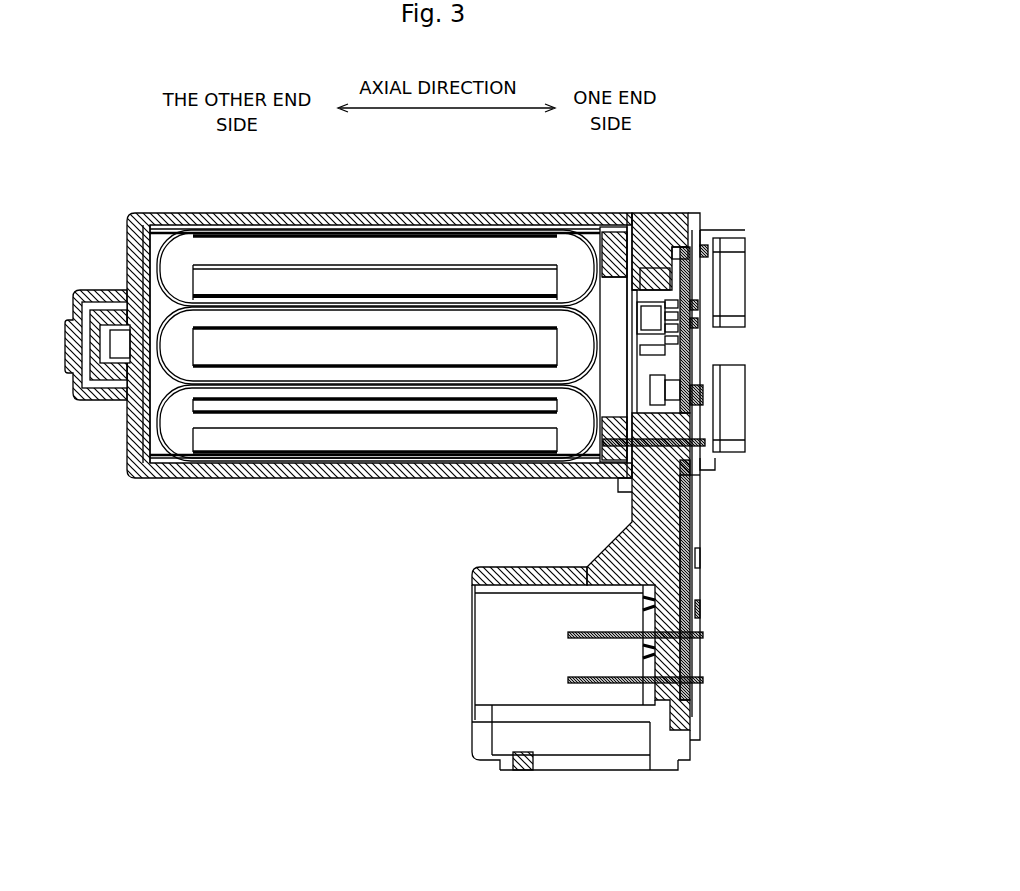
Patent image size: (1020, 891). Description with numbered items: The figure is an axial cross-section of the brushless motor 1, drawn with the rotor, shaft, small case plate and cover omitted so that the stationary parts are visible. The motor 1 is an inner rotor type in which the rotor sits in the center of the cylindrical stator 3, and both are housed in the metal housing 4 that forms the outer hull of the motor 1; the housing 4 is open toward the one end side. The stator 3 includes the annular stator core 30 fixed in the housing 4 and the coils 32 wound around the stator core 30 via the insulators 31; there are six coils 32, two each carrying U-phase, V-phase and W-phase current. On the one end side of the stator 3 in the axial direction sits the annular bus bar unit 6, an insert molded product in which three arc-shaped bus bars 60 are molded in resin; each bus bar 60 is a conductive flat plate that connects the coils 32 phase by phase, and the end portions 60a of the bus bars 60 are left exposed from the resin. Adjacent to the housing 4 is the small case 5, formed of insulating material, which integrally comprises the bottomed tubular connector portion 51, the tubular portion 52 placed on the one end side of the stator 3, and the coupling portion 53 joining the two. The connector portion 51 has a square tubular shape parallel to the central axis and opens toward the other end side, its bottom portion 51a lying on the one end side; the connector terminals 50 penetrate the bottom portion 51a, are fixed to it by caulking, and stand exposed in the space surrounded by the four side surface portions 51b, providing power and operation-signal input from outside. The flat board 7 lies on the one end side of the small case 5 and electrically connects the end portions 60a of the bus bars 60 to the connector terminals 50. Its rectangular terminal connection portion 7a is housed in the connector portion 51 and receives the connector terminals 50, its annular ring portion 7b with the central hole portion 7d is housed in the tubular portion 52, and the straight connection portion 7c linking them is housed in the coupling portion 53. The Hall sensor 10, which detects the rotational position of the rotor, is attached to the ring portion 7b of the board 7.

The brushless motor 1 is at (758, 168).
The stator 3 is at (148, 428).
The housing 4 is at (350, 220).
The small case 5 is at (681, 734).
The bus bar unit 6 is at (618, 226).
The board 7 is at (685, 495).
The terminal connection portion 7a is at (699, 606).
The ring portion 7b is at (706, 266).
The connection portion 7c is at (694, 515).
The hole portion 7d is at (688, 355).
The Hall sensor 10 is at (665, 323).
The stator core 30 is at (377, 348).
The insulator 31 is at (180, 410).
The coil 32 is at (178, 246).
The connector terminal 50 is at (568, 680).
The connector portion 51 is at (585, 647).
The bottom portion 51a is at (690, 659).
The side surface portion 51b is at (510, 567).
The tubular portion 52 is at (650, 222).
The coupling portion 53 is at (631, 504).
The bus bar 60 is at (716, 464).
The end portion 60a is at (707, 444).